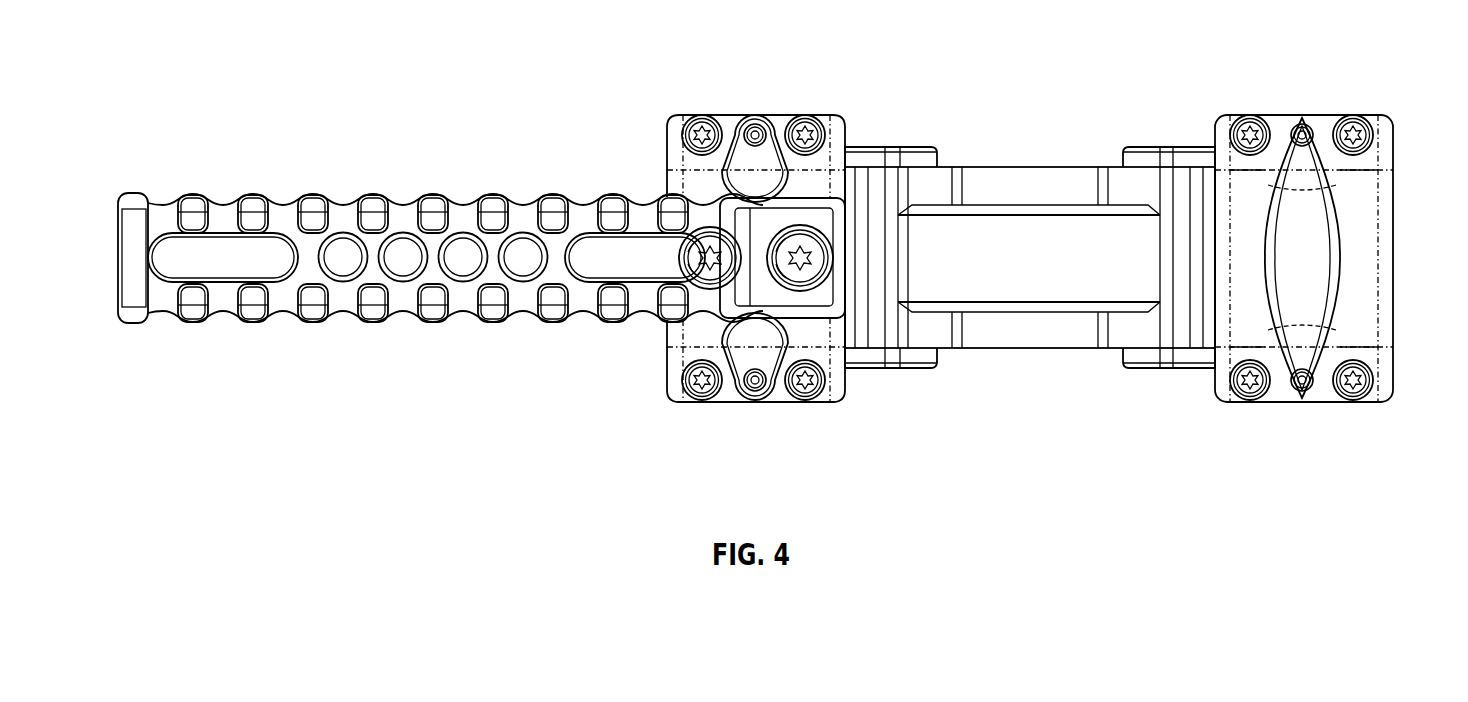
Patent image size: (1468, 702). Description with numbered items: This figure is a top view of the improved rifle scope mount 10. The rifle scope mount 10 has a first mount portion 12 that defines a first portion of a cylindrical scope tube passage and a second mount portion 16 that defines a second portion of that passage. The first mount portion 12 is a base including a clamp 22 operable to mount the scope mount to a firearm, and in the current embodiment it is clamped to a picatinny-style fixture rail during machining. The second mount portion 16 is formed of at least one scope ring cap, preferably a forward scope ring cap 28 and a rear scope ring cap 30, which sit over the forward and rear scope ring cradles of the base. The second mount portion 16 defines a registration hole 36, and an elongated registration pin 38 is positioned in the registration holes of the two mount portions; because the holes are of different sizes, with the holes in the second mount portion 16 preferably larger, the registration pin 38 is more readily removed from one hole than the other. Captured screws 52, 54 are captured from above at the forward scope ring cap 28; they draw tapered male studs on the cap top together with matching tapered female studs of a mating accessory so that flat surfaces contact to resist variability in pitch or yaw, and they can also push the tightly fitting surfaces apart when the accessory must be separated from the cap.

The rifle scope mount 10 is at (146, 96).
The first mount portion 12 is at (1009, 166).
The second mount portion 16 is at (1378, 151).
The clamp 22 is at (890, 372).
The forward scope ring cap 28 is at (683, 185).
The rear scope ring cap 30 is at (1366, 256).
The registration hole 36 is at (763, 125).
The elongated registration pin 38 is at (737, 128).
The captured screw 52 is at (690, 252).
The captured screw 54 is at (836, 268).